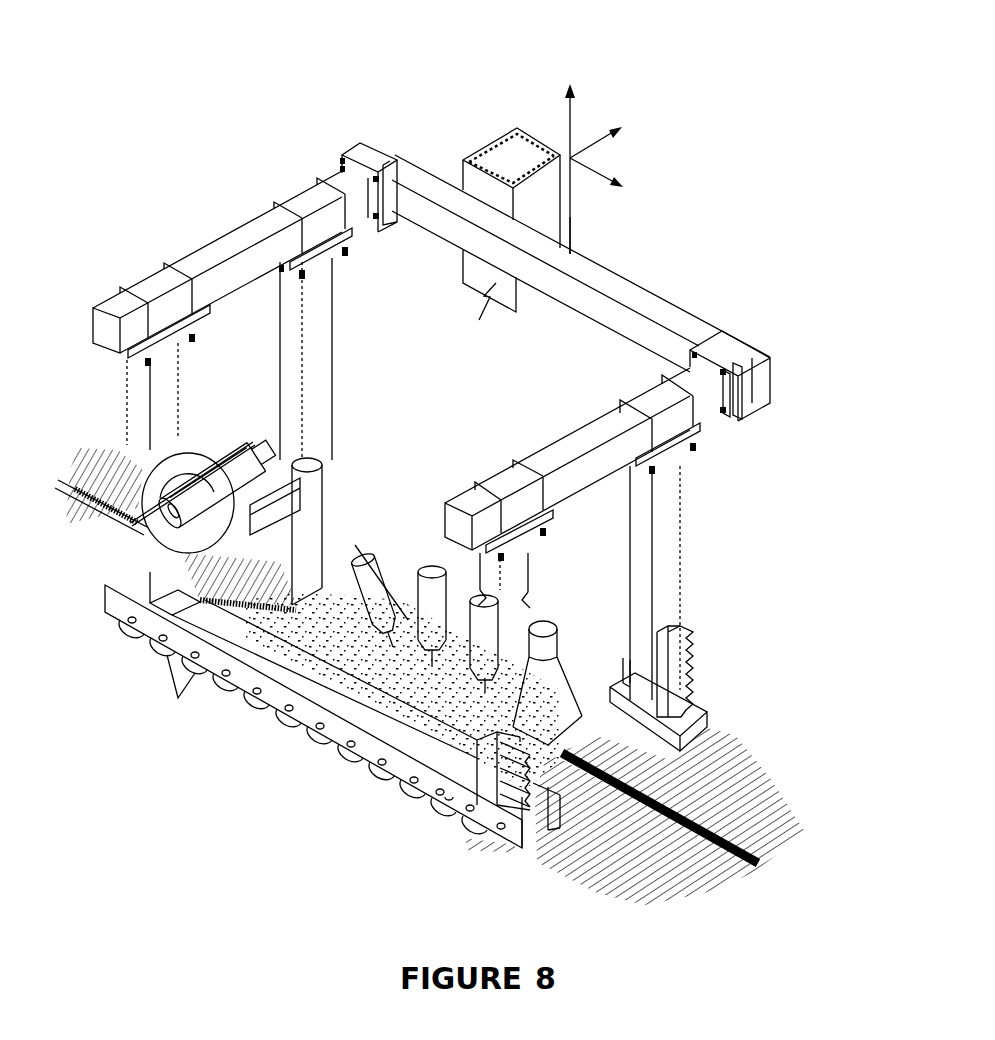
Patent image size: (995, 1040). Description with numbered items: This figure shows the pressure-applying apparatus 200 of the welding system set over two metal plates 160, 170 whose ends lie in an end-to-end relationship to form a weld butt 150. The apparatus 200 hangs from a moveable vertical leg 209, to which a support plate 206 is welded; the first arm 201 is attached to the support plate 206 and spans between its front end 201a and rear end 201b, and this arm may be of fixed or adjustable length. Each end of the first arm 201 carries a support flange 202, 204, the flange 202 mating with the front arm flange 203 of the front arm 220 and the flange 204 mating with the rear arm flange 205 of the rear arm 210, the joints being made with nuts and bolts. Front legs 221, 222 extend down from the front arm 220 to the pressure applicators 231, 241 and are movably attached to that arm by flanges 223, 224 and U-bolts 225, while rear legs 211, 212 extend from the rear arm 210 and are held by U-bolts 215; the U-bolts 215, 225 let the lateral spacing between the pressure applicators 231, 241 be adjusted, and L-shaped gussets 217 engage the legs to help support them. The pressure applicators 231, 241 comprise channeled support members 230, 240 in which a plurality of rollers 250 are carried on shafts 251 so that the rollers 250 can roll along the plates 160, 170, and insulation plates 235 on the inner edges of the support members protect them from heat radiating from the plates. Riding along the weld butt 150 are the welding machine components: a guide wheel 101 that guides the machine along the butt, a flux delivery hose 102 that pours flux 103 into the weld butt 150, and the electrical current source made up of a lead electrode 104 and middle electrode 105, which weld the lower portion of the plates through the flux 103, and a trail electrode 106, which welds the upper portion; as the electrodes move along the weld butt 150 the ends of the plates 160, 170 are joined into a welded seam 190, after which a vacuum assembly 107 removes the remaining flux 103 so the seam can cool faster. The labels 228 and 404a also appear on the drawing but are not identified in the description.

The apparatus 200 is at (203, 130).
The first arm 201 is at (628, 292).
The front end of first arm 201a is at (367, 120).
The rear end of first arm 201b is at (767, 367).
The support flange 202 is at (361, 140).
The front arm flange 203 is at (345, 150).
The support flange 204 is at (745, 398).
The rear arm flange 205 is at (738, 417).
The support plate 206 is at (465, 160).
The vertical leg 209 is at (574, 225).
The rear arm 210 is at (560, 435).
The rear leg 211 is at (518, 560).
The rear leg 212 is at (668, 572).
The U-bolts 215 is at (480, 480).
The L-shaped gussets 217 is at (328, 493).
The front arm 220 is at (228, 246).
The front leg 221 is at (165, 418).
The front leg 222 is at (292, 380).
The flange 223 is at (288, 268).
The flange 224 is at (196, 347).
The U-bolts 225 is at (274, 200).
The post edge 228 is at (282, 356).
The channeled support member 230 is at (424, 582).
The pressure applicator 231 is at (563, 607).
The insulation plates 235 is at (672, 650).
The channeled support member 240 is at (333, 697).
The pressure applicator 241 is at (389, 812).
The rollers 250 is at (318, 736).
The shafts 251 is at (285, 707).
The guide wheel 101 is at (129, 456).
The flux delivery hose 102 is at (280, 600).
The flux 103 is at (335, 640).
The lead electrode 104 is at (378, 597).
The middle electrode 105 is at (443, 617).
The trail electrode 106 is at (542, 622).
The vacuum assembly 107 is at (645, 575).
The weld butt 150 is at (60, 478).
The metal plate 160 is at (660, 864).
The metal plate 170 is at (745, 800).
The welded seam 190 is at (722, 862).
The pads 404a is at (273, 443).